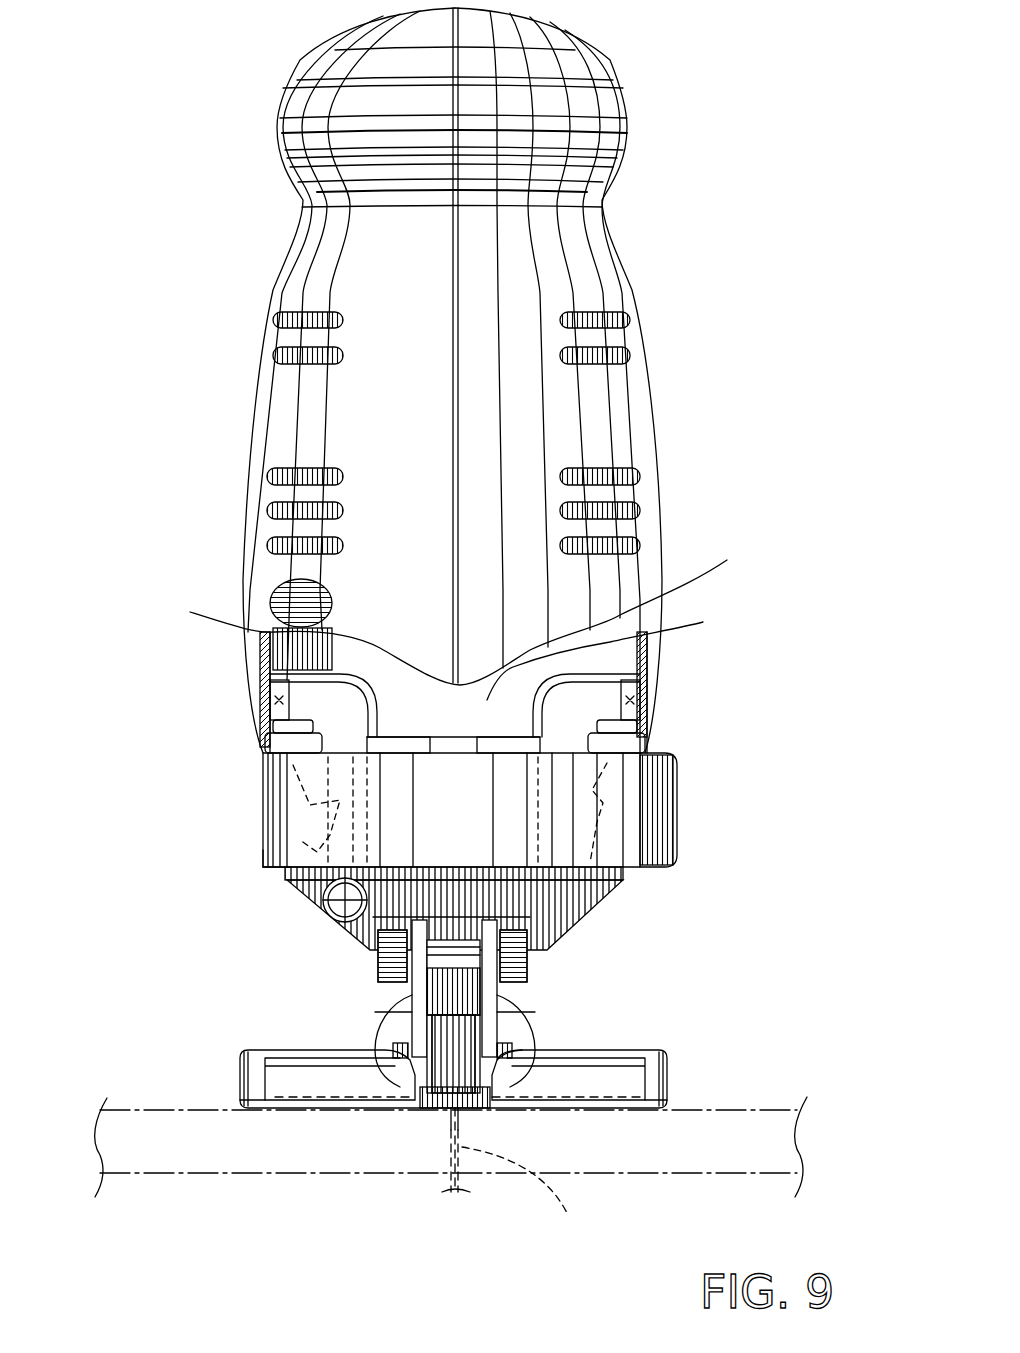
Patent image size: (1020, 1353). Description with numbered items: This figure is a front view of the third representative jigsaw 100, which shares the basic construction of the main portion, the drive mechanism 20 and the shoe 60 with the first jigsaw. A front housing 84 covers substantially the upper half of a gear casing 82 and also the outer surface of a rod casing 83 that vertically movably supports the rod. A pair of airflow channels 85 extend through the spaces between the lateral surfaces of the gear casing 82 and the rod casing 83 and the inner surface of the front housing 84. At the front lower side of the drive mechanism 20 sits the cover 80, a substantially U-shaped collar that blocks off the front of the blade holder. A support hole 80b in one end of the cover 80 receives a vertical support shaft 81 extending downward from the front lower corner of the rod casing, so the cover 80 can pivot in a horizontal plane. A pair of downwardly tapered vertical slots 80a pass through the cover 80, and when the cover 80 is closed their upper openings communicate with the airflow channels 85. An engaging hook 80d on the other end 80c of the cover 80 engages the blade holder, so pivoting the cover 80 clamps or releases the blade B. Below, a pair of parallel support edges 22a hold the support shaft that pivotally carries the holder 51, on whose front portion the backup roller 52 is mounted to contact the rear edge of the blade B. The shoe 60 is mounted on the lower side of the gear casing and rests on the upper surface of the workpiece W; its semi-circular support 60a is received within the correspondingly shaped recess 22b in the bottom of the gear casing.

The third representative jigsaw 100 is at (675, 283).
The drive mechanism 20 is at (645, 412).
The front housing 84 is at (265, 408).
The rod casing 83 is at (480, 615).
The gear casing 82 is at (267, 653).
The airflow channels 85 is at (270, 702).
The cover 80 is at (688, 802).
The vertical slots 80a is at (265, 790).
The support hole 80b is at (265, 858).
The other end of the cover 80c is at (680, 836).
The engaging hook 80d is at (605, 890).
The vertical support shaft 81 is at (262, 825).
The support edges 22a is at (390, 957).
The recess 22b is at (505, 1000).
The holder 51 is at (415, 1011).
The backup roller 52 is at (447, 1052).
The shoe 60 is at (667, 1047).
The support 60a is at (533, 1030).
The workpiece W is at (760, 1117).
The blade B is at (518, 1195).